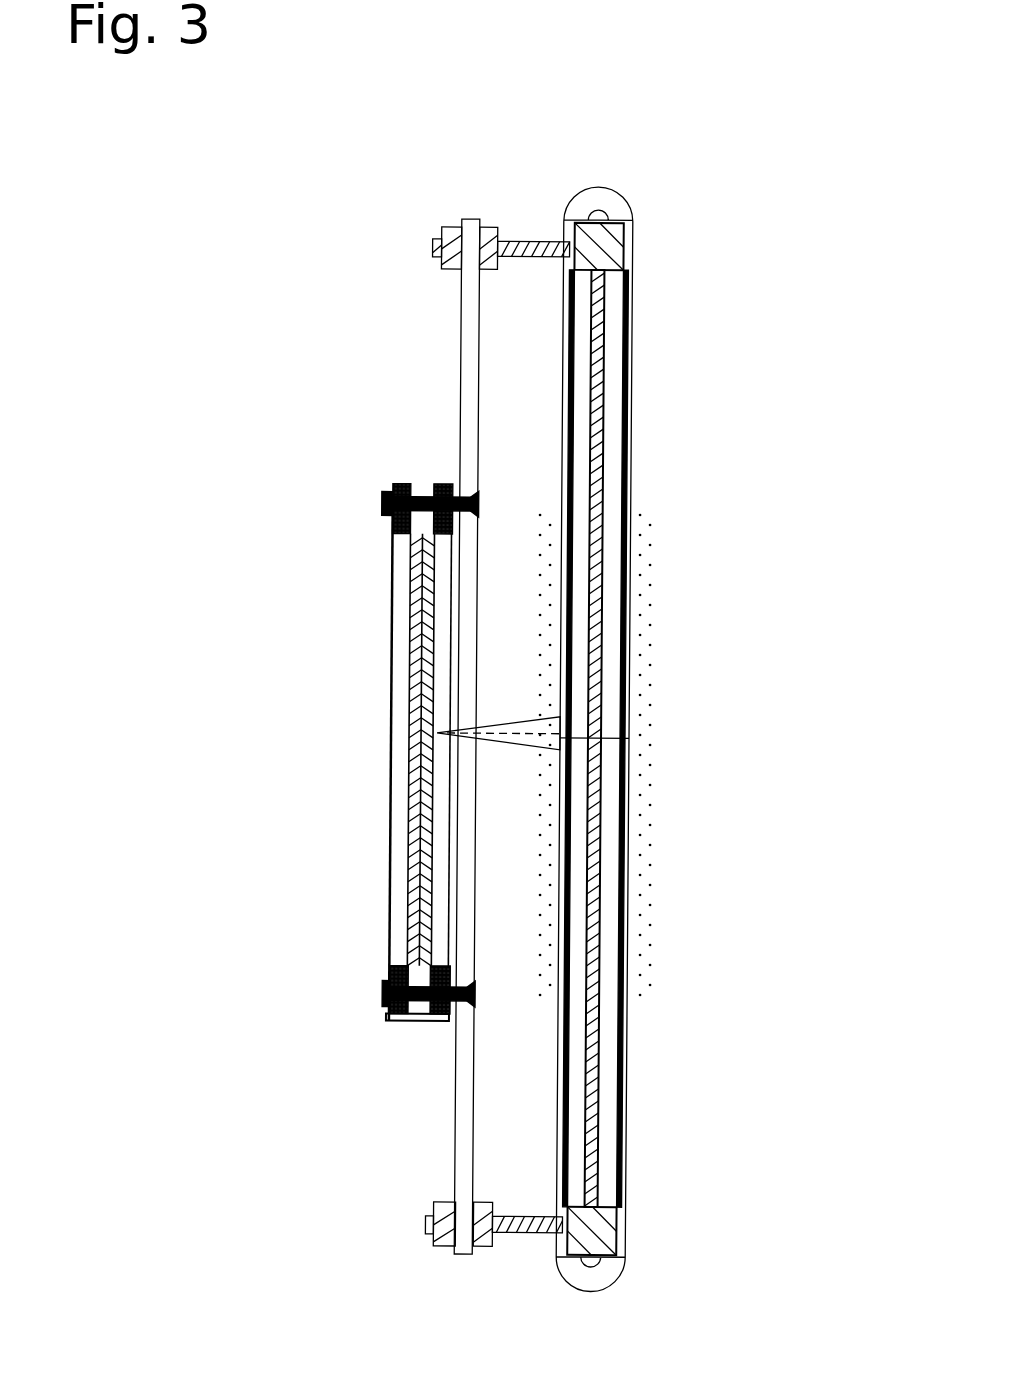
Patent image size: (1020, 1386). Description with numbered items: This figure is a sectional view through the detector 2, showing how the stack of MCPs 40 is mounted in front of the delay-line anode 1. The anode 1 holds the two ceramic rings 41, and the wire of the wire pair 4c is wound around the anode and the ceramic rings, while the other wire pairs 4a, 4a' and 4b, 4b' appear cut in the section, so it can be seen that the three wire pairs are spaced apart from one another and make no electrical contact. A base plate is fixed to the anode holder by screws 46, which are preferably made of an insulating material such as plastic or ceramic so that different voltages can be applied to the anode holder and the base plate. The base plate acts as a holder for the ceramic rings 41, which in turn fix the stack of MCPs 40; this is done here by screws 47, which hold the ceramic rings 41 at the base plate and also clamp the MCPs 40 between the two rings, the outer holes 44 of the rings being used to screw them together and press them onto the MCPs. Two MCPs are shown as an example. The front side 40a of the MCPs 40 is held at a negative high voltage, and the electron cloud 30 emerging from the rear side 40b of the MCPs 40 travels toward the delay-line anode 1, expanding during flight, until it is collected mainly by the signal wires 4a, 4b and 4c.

The anode 1 is at (697, 938).
The light-conducting tube 2 is at (600, 397).
The signal wire 4a is at (718, 742).
The signal wire 4a' is at (723, 752).
The signal wire 4b is at (670, 755).
The signal wire 4b' is at (680, 755).
The wire of wire pair 4c is at (633, 288).
The electron cloud 30 is at (497, 747).
The stack of MCPs 40 is at (403, 485).
The front side of the MCPs 40a is at (410, 668).
The rear side of the MCPs 40b is at (433, 775).
The ceramic ring 41 is at (385, 520).
The outer holes 44 is at (382, 992).
The screws 46 is at (520, 240).
The screws 47 is at (426, 485).